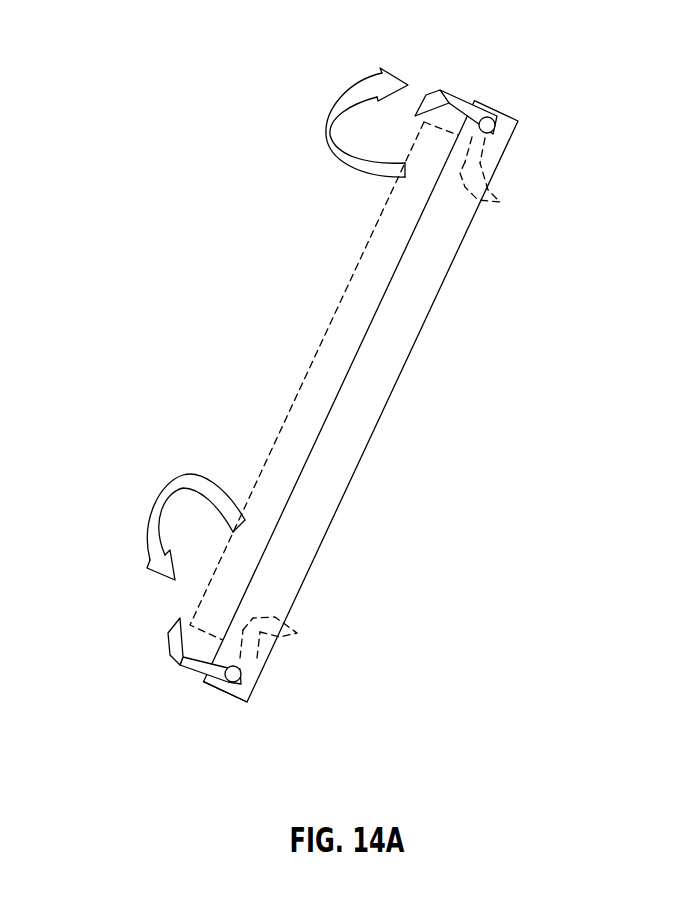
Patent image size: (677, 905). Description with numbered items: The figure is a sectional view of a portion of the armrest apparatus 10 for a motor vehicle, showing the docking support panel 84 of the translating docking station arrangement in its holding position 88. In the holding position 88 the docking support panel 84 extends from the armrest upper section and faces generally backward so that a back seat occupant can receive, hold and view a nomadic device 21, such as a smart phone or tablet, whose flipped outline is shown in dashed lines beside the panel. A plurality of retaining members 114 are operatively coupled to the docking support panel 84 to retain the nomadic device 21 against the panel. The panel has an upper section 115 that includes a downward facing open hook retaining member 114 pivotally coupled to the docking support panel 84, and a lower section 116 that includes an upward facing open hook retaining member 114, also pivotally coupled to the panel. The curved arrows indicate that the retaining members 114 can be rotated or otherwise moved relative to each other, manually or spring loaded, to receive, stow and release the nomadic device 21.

The armrest apparatus 10 is at (540, 100).
The nomadic device 21 is at (345, 297).
The docking support panel 84 is at (412, 300).
The holding position 88 is at (546, 164).
The retaining members 114 is at (463, 92).
The upper section 115 is at (497, 113).
The lower section 116 is at (223, 693).